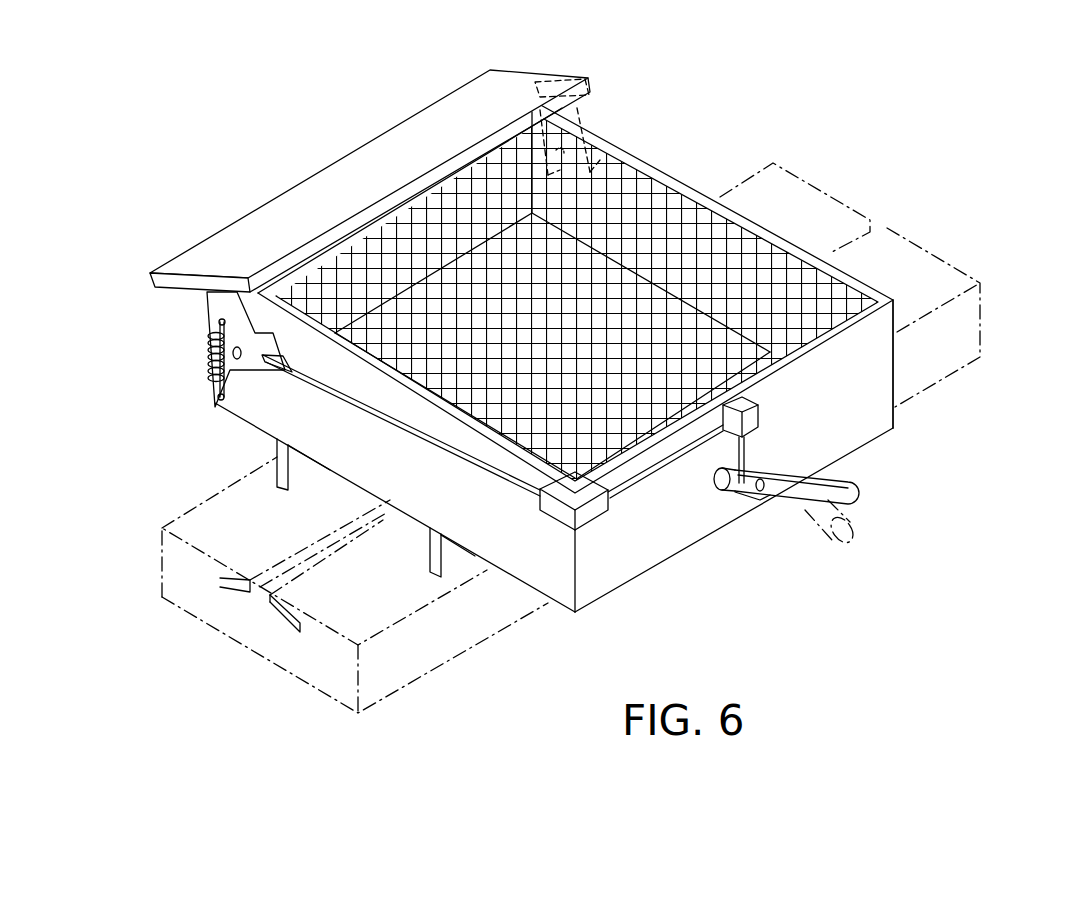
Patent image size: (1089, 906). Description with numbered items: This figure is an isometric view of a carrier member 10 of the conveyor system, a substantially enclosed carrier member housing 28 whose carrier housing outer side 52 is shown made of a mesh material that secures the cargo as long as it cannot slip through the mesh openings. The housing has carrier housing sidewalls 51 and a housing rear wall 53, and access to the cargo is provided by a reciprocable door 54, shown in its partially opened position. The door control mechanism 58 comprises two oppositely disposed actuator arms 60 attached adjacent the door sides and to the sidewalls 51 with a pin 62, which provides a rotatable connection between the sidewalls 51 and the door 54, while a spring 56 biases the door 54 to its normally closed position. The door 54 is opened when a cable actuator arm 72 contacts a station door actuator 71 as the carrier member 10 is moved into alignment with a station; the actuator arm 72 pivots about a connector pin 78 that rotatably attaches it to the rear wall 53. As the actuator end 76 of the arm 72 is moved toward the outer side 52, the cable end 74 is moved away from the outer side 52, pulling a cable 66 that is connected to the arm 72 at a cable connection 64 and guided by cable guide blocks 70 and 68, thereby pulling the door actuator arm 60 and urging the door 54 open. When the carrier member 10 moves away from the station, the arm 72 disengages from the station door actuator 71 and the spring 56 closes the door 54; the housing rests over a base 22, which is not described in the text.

The carrier member 10 is at (905, 271).
The base 22 is at (393, 680).
The carrier member housing 28 is at (862, 395).
The carrier housing sidewalls 51 is at (563, 578).
The carrier housing outer side 52 is at (662, 195).
The housing rear wall 53 is at (598, 578).
The reciprocable door 54 is at (383, 162).
The spring 56 is at (208, 360).
The door control mechanism 58 is at (675, 520).
The actuator arms 60 is at (205, 300).
The pin 62 is at (236, 368).
The cable connection 64 is at (265, 372).
The cable 66 is at (400, 420).
The cable guide block 68 is at (585, 520).
The cable guide block 70 is at (752, 412).
The station door actuator 71 is at (840, 530).
The cable actuator arm 72 is at (775, 475).
The cable end 74 is at (715, 478).
The actuator end 76 is at (856, 500).
The connector pin 78 is at (762, 492).